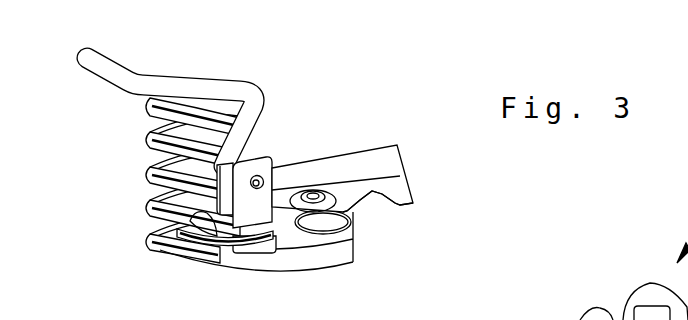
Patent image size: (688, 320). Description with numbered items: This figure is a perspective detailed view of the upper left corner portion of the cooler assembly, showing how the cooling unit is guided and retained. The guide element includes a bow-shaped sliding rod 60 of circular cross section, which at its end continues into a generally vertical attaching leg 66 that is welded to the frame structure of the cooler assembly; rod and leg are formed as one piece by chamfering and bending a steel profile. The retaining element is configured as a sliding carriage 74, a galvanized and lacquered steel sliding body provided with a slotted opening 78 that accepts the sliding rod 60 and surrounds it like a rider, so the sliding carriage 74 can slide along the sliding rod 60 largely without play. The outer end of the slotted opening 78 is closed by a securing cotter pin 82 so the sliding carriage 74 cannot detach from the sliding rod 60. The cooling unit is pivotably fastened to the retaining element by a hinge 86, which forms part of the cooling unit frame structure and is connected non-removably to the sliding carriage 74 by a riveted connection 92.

The sliding rod 60 is at (358, 168).
The attaching leg 66 is at (120, 73).
The sliding carriage 74 is at (240, 213).
The slotted opening 78 is at (222, 206).
The securing cotter pin 82 is at (270, 168).
The hinge 86 is at (400, 187).
The riveted connection 92 is at (246, 236).